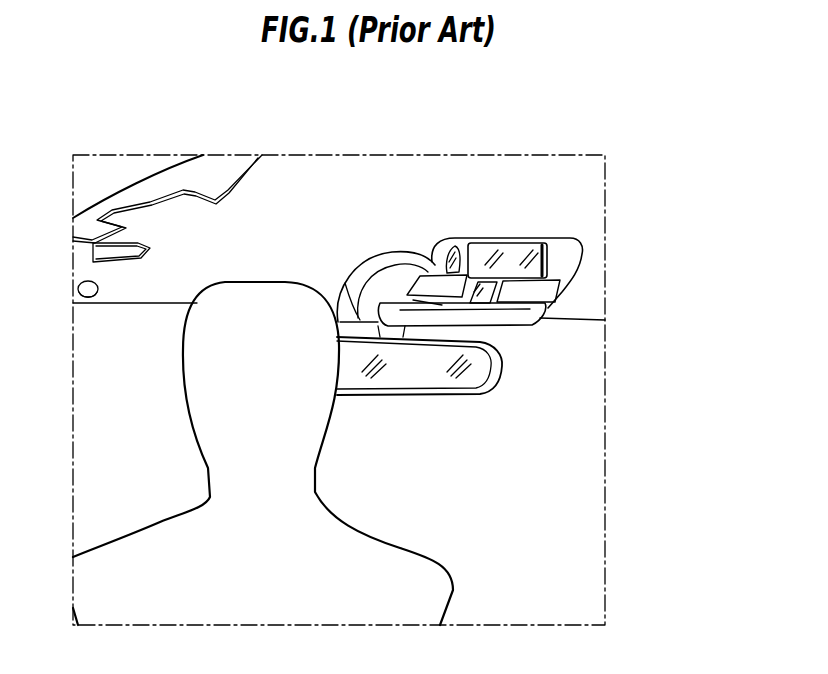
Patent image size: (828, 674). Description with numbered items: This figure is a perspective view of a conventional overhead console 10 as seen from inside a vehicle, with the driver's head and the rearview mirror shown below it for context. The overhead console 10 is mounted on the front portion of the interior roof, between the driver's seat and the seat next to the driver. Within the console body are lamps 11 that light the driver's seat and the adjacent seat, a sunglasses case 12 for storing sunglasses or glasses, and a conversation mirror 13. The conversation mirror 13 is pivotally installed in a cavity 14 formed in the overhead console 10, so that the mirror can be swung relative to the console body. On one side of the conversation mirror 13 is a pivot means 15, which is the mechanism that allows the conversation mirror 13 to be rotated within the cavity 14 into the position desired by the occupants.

The overhead console 10 is at (432, 262).
The lamps 11 is at (578, 258).
The sunglasses case 12 is at (367, 312).
The conversation mirror 13 is at (520, 243).
The cavity 14 is at (518, 318).
The pivot means 15 is at (462, 234).